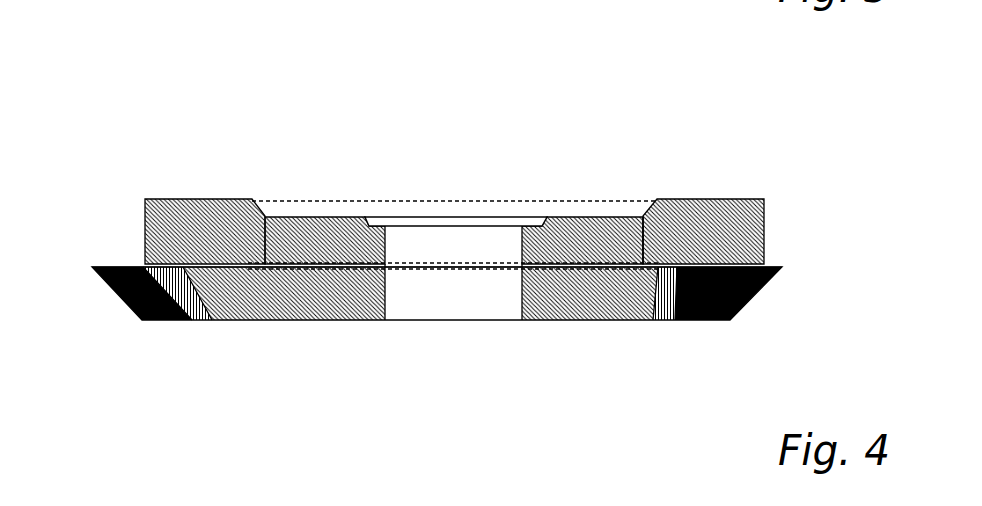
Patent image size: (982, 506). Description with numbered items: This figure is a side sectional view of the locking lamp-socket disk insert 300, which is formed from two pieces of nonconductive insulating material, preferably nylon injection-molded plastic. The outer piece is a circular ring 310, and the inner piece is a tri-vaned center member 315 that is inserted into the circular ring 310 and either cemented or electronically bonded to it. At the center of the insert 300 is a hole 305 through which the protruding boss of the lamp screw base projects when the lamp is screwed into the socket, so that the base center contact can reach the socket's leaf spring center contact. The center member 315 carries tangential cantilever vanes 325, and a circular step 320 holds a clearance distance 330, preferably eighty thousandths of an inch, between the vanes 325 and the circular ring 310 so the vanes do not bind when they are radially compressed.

The disk insert 300 is at (128, 45).
The hole 305 is at (387, 252).
The circular ring 310 is at (213, 233).
The tri-vaned center member 315 is at (333, 285).
The circular step 320 is at (650, 265).
The tangential cantilever vanes 325 is at (748, 305).
The clearance distance 330 is at (660, 267).